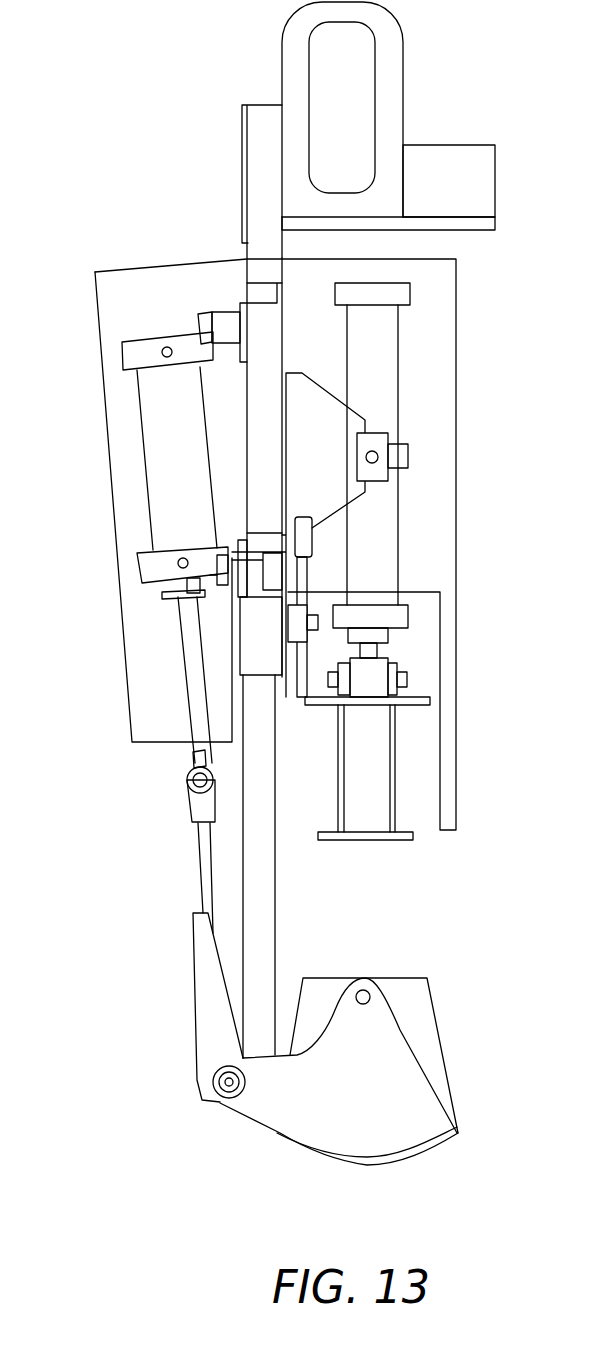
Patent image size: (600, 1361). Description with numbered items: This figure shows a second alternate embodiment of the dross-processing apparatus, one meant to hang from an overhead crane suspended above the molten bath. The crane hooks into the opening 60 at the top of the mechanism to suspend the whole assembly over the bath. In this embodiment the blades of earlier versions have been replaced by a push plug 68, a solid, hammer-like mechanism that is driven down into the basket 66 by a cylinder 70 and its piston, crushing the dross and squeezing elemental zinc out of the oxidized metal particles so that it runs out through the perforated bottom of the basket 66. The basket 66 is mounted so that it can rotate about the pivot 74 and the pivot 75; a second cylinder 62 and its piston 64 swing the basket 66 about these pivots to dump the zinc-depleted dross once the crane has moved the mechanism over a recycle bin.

The opening 60 is at (355, 65).
The cylinder 62 is at (160, 466).
The piston 64 is at (185, 692).
The basket 66 is at (423, 1157).
The push plug 68 is at (383, 770).
The cylinder 70 is at (385, 528).
The pivot 74 is at (227, 1082).
The pivot 75 is at (365, 1000).